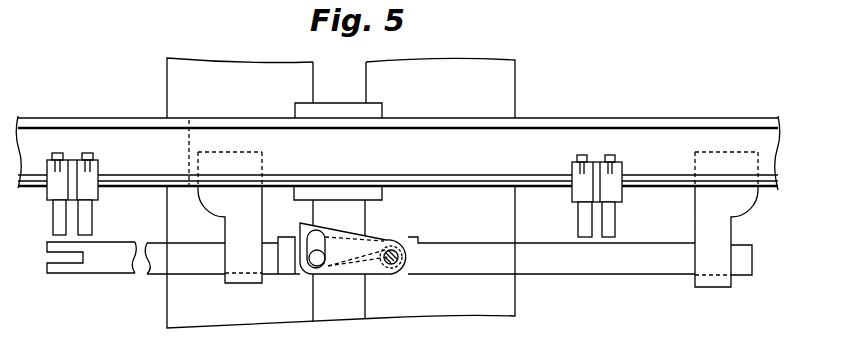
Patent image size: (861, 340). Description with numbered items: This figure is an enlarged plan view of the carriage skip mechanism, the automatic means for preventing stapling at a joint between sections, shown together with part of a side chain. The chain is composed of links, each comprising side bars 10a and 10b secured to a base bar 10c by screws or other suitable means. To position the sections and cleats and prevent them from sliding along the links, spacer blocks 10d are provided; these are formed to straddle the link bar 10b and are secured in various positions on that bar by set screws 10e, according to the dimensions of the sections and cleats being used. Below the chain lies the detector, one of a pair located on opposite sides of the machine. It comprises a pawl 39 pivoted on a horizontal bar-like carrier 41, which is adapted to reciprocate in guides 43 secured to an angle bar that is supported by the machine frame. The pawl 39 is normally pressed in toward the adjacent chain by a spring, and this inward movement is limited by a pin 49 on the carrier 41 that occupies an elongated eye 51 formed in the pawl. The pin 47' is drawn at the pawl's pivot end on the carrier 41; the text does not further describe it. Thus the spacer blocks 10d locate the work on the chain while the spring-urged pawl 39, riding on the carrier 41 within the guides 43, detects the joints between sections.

The side bar 10a is at (618, 127).
The side bar 10b is at (545, 178).
The base bar 10c is at (552, 135).
The spacer block 10d is at (101, 163).
The set screw 10e is at (57, 158).
The pawl 39 is at (330, 232).
The carrier 41 is at (447, 250).
The guide 43 is at (228, 222).
The pin 47' is at (364, 274).
The pin 49 is at (312, 265).
The elongated eye 51 is at (305, 245).